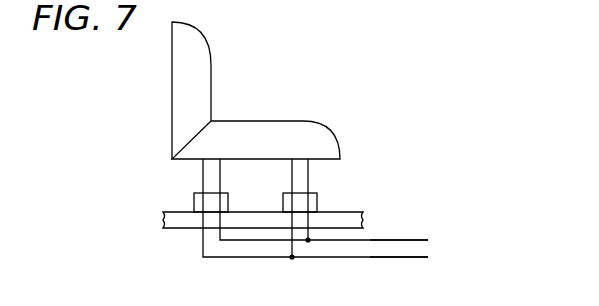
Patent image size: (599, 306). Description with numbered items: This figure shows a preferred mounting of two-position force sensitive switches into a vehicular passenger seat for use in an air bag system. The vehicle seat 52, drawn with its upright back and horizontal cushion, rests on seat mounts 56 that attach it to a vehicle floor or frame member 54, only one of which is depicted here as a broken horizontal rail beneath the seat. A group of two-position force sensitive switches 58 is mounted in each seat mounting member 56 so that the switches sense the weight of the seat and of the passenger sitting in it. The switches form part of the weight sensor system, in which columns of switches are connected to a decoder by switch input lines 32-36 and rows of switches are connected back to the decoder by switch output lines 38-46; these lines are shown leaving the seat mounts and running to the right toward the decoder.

The vehicle seat 52 is at (257, 65).
The vehicle floor or frame member 54 is at (192, 229).
The seat mount 56 is at (293, 171).
The two-position force sensitive switches 58 is at (283, 197).
The switch input lines 32-36 is at (378, 240).
The switch output lines 38-46 is at (378, 257).